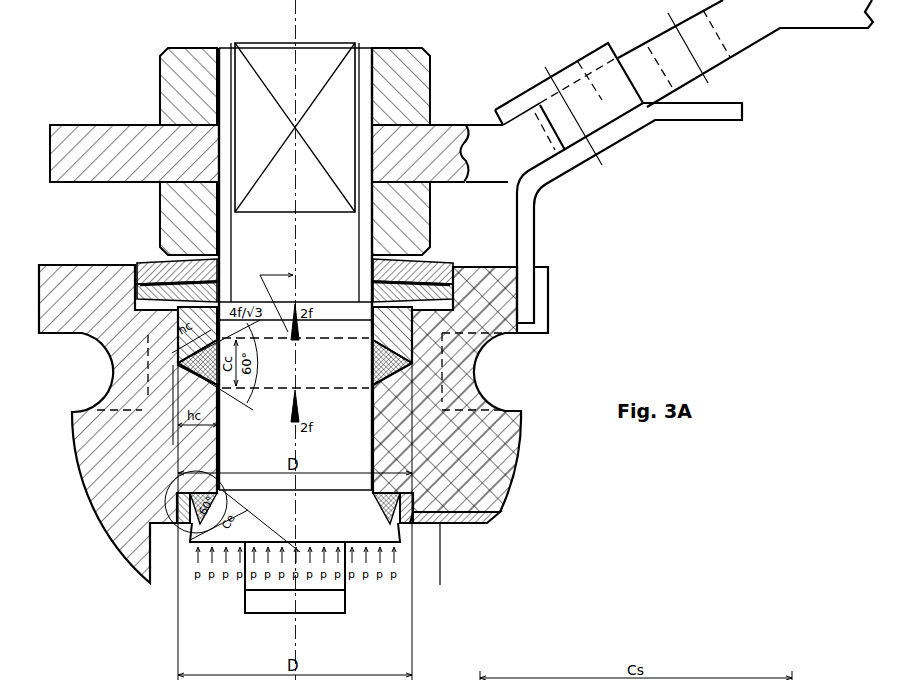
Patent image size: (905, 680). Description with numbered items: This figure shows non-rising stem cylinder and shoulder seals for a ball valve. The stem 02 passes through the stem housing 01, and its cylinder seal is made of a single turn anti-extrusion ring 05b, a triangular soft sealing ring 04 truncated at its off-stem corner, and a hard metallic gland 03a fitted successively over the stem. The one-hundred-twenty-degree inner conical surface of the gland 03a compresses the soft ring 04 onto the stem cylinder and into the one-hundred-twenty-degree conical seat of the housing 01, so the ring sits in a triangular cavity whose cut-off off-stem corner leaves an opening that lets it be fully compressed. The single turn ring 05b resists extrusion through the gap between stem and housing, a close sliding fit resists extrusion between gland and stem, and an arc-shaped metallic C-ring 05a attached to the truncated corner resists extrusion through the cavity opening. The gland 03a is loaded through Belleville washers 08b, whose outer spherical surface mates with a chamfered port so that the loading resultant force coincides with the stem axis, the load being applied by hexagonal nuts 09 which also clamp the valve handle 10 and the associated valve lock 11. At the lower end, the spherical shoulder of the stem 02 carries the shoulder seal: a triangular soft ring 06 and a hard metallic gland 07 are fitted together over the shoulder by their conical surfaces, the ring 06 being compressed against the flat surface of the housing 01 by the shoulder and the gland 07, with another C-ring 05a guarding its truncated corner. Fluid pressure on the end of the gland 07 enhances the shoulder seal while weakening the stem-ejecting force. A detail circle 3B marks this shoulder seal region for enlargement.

The stem housing 01 is at (120, 447).
The stem 02 is at (308, 20).
The hard metallic gland 03a is at (480, 380).
The soft sealing ring for stem cylinder 04 is at (374, 388).
The anti-extrusion metallic ring 05a is at (177, 364).
The single turn anti-extrusion ring 05b is at (375, 402).
The soft sealing ring for stem shoulder 06 is at (413, 524).
The hard metallic gland for stem shoulder 07 is at (413, 497).
The Belleville washer 08b is at (482, 351).
The hexagonal nut 09 is at (418, 83).
The valve handle 10 is at (448, 132).
The valve lock 11 is at (572, 241).
The detail view circle 3B is at (167, 513).